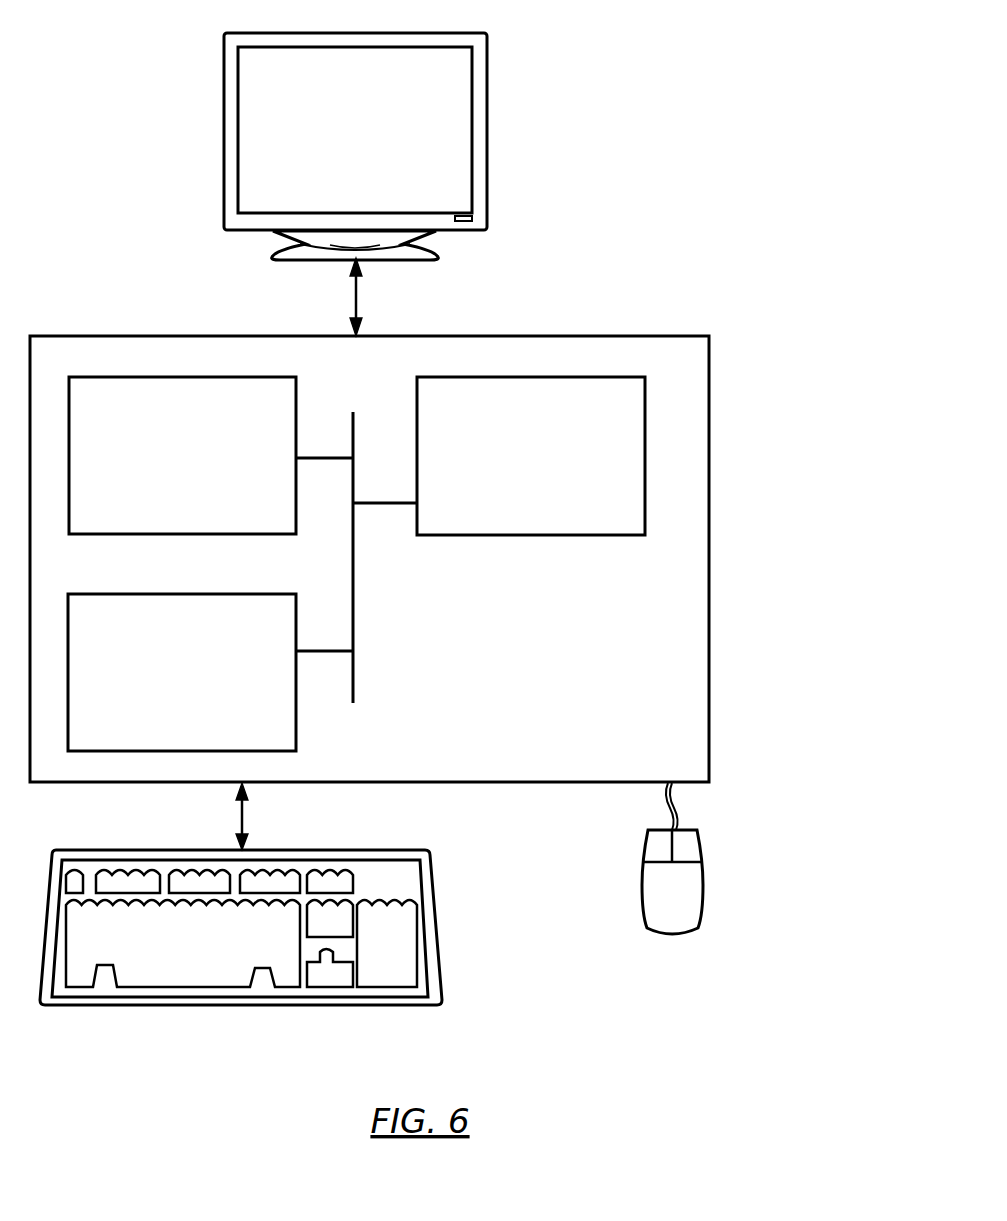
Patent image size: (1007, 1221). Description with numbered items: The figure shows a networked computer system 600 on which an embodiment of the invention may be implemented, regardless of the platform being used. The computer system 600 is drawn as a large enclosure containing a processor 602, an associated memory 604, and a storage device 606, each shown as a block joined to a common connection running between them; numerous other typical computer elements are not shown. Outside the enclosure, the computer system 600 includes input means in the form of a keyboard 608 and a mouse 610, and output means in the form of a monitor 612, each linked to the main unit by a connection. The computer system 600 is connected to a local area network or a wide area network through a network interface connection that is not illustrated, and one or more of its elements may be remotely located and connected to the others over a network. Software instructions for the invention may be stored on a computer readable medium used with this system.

The networked computer system 600 is at (768, 343).
The processor 602 is at (531, 456).
The memory 604 is at (182, 455).
The storage device 606 is at (182, 672).
The keyboard 608 is at (241, 927).
The mouse 610 is at (712, 944).
The monitor 612 is at (355, 146).